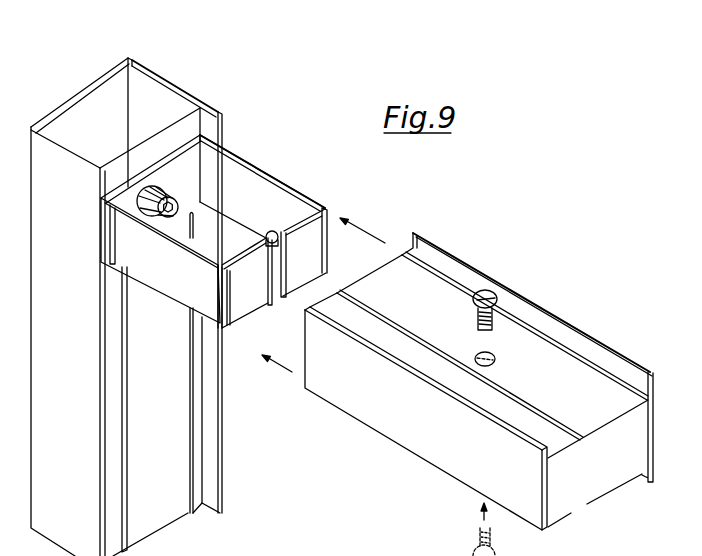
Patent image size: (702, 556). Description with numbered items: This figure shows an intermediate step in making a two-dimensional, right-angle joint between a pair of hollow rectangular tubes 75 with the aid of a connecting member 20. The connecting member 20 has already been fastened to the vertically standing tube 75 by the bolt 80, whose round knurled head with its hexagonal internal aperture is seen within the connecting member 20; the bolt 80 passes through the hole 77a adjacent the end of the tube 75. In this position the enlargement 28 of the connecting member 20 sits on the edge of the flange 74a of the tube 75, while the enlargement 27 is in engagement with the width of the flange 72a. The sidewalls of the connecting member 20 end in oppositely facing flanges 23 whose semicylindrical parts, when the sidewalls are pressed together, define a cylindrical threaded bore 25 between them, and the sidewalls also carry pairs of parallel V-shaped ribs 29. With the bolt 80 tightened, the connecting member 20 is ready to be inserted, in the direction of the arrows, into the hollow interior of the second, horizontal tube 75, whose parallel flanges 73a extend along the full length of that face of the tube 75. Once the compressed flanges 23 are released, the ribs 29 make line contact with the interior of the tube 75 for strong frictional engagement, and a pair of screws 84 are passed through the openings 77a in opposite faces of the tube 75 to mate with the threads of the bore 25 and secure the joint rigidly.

The connecting member 20 is at (208, 218).
The flange 23 is at (307, 270).
The threaded bore 25 is at (274, 231).
The enlargement 27 is at (210, 137).
The enlargement 28 is at (100, 215).
The ribs 29 is at (324, 212).
The flange 72a is at (225, 142).
The flanges 73a is at (492, 346).
The flange 74a is at (100, 306).
The tube 75 is at (342, 307).
The hole 77a is at (497, 359).
The bolt 80 is at (162, 191).
The screws 84 is at (493, 292).